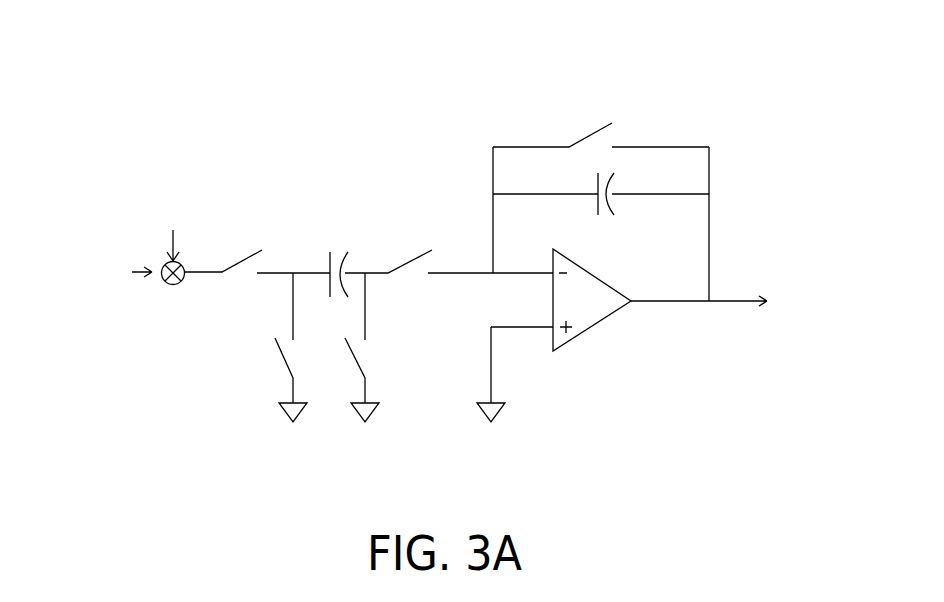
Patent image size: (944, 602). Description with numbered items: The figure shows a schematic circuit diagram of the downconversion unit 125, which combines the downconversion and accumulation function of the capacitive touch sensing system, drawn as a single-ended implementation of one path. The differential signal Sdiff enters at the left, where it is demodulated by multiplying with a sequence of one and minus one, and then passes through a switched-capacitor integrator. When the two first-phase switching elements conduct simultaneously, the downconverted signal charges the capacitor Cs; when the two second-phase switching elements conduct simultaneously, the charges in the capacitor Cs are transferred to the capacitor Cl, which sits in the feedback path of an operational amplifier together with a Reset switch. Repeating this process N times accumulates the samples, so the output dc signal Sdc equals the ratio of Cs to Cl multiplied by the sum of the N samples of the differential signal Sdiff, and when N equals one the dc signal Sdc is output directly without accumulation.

The downconversion unit 125 is at (708, 75).
The differential signal Sdiff is at (115, 273).
The capacitor CS Cs is at (340, 259).
The reset switch Reset is at (601, 120).
The capacitor CI Cl is at (601, 210).
The dc signal Sdc is at (719, 301).